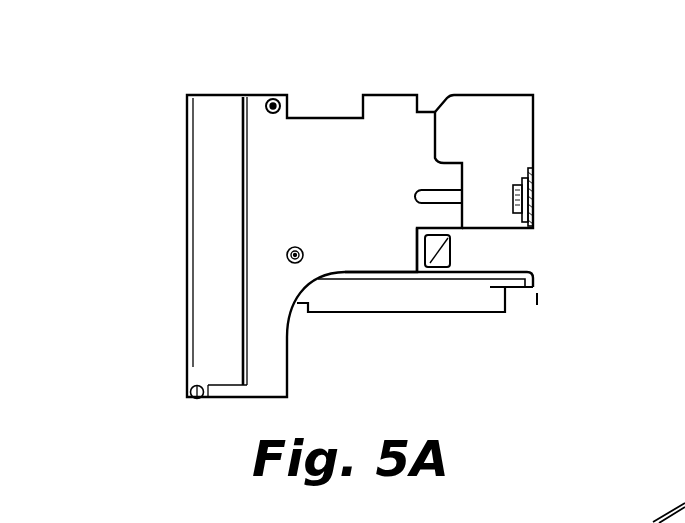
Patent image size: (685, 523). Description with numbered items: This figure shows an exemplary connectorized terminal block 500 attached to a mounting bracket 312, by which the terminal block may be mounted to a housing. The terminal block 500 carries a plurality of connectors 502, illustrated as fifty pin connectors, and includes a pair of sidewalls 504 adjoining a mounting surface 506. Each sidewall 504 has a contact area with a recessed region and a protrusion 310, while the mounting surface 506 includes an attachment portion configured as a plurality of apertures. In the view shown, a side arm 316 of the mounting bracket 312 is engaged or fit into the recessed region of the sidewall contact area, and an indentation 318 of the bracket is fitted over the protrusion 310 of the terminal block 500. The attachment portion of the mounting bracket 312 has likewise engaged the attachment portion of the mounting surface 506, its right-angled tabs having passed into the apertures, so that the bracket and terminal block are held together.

The terminal block 500 is at (212, 72).
The sidewall 504 is at (393, 150).
The mounting surface 506 is at (535, 133).
The mounting bracket 312 is at (540, 232).
The side arm 316 is at (518, 253).
The indentation 318 is at (442, 272).
The protrusion 310 is at (428, 252).
The connector 502 is at (430, 310).